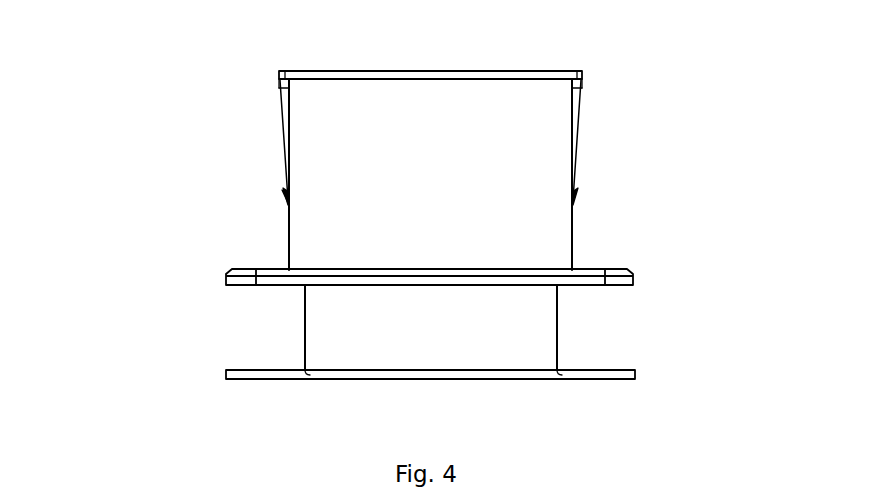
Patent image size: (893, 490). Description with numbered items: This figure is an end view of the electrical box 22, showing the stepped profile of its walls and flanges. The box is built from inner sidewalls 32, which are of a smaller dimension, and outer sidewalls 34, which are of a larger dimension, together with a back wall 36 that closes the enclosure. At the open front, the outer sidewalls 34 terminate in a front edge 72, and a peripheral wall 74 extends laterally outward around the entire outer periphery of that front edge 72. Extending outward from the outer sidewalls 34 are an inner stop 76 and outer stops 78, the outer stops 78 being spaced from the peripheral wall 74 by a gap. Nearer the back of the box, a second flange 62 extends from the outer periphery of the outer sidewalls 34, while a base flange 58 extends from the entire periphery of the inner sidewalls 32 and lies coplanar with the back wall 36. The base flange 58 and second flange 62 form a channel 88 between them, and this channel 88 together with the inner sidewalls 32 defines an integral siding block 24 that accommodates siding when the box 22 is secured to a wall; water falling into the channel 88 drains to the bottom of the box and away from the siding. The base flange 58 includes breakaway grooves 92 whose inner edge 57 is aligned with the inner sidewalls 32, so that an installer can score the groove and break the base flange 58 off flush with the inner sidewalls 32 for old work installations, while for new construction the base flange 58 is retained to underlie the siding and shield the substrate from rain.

The electrical box 22 is at (182, 88).
The siding block 24 is at (213, 277).
The inner sidewalls 32 is at (450, 339).
The outer sidewalls 34 is at (450, 177).
The back wall 36 is at (430, 380).
The inner edge 57 is at (303, 373).
The base flange 58 is at (635, 375).
The second flange 62 is at (633, 280).
The front edge 72 is at (430, 71).
The peripheral wall 74 is at (582, 75).
The inner stop 76 is at (574, 196).
The outer stops 78 is at (577, 135).
The channel 88 is at (557, 325).
The breakaway grooves 92 is at (560, 376).